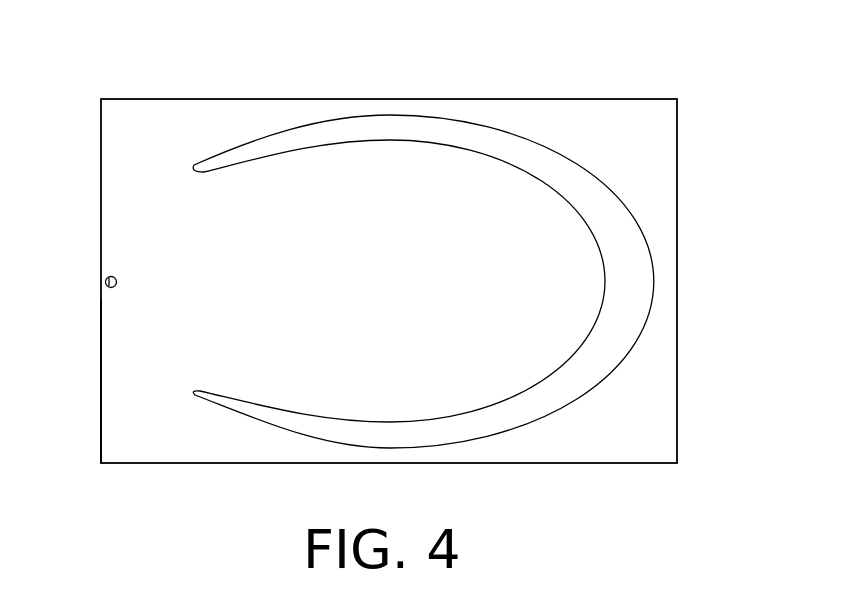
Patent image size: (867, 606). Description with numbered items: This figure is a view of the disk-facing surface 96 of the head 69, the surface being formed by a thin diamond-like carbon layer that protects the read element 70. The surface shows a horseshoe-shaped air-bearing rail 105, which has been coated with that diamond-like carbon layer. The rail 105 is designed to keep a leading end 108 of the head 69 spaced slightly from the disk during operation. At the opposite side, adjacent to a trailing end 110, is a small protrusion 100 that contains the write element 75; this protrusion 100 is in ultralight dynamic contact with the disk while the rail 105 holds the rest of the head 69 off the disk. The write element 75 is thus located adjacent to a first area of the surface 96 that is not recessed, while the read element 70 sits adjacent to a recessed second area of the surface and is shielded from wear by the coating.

The head 69 is at (660, 44).
The read element 70 is at (123, 278).
The write element 75 is at (105, 278).
The disk-facing surface 96 is at (416, 300).
The protrusion 100 is at (102, 288).
The air-bearing rail 105 is at (543, 418).
The leading end 108 is at (677, 383).
The trailing end 110 is at (101, 414).